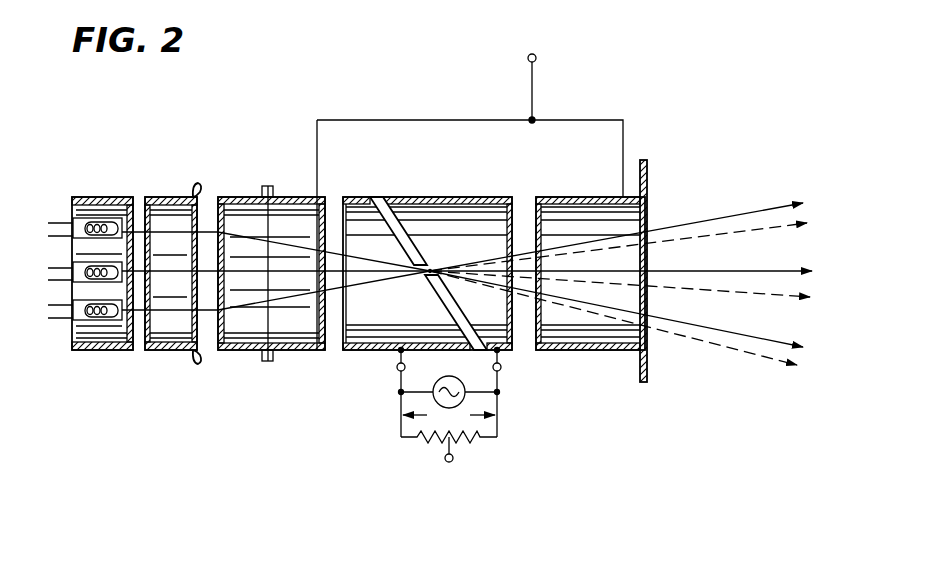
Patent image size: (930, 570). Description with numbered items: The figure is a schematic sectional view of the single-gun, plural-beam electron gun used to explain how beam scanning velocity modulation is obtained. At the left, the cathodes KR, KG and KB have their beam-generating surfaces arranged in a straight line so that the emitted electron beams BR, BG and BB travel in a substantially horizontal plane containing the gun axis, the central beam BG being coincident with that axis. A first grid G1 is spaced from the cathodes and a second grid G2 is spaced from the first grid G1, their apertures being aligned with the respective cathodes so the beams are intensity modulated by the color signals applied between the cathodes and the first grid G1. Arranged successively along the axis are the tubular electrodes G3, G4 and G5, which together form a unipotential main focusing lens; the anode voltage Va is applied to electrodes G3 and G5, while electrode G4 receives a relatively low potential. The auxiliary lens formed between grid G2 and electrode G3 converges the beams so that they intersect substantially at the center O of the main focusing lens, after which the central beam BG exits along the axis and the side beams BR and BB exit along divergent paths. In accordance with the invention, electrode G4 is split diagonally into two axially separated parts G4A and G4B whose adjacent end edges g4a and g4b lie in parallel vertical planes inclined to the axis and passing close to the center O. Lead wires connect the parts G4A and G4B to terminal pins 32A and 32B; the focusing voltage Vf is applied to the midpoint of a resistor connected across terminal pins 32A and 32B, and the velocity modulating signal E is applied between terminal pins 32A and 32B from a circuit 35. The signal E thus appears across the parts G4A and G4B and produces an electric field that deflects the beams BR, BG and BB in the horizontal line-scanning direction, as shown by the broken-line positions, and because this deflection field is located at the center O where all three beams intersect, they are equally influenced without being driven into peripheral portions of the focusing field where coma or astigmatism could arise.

The first grid G1 is at (117, 197).
The second grid G2 is at (169, 197).
The tubular electrode G3 is at (296, 195).
The tubular electrode G4 is at (431, 242).
The electrode part G4A is at (381, 231).
The electrode part G4B is at (456, 254).
The tubular electrode G5 is at (594, 197).
The cathode KR is at (76, 243).
The cathode KG is at (76, 285).
The cathode KB is at (80, 323).
The center of the main focusing lens O is at (430, 266).
The end edge g4a is at (428, 288).
The end edge g4b is at (455, 295).
The terminal pin 32A is at (398, 370).
The terminal pin 32B is at (500, 370).
The circuit 35 is at (452, 380).
The velocity modulating signal E is at (449, 416).
The focusing voltage Vf is at (449, 462).
The anode voltage Va is at (537, 59).
The electron beam BB is at (766, 208).
The electron beam BG is at (784, 268).
The electron beam BR is at (776, 338).